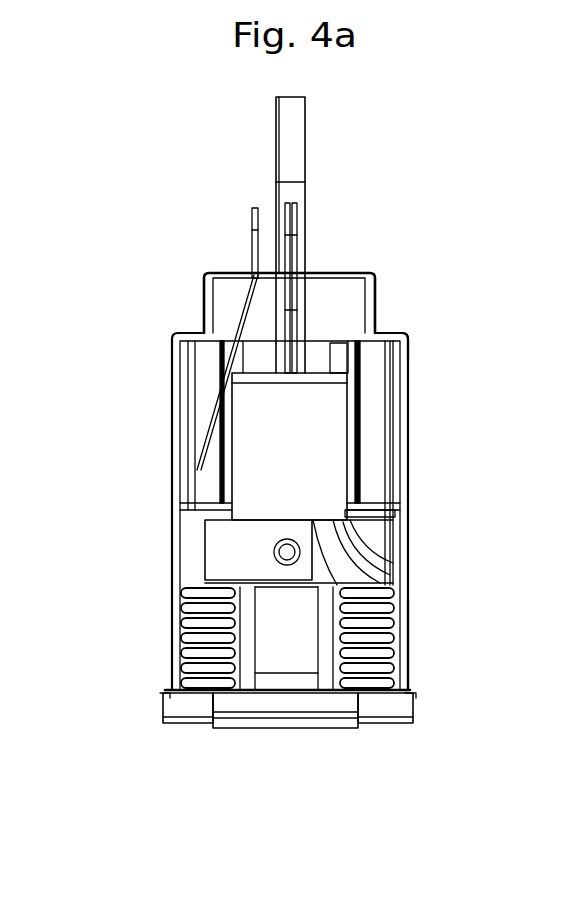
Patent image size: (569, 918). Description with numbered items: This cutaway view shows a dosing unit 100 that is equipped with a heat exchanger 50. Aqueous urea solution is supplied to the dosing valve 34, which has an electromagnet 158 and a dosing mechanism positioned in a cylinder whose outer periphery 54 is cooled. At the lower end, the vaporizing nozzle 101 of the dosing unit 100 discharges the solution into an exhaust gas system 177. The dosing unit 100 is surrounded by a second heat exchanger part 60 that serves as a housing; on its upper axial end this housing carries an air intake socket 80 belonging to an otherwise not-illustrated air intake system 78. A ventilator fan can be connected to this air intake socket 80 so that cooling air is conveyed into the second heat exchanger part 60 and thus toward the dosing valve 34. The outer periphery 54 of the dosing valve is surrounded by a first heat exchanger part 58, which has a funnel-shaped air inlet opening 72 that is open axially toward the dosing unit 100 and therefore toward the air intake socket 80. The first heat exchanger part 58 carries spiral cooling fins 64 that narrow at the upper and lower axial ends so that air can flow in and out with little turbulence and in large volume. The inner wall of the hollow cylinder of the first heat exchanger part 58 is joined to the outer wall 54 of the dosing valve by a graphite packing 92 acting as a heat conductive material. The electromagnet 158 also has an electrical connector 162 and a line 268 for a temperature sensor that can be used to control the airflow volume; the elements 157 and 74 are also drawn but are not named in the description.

The actuating rod 157 is at (293, 152).
The electrical connector 162 is at (297, 242).
The dosing unit 100 is at (392, 278).
The line for a temperature sensor 268 is at (256, 265).
The air intake system 78 is at (203, 300).
The air intake socket 80 is at (224, 305).
The dosing valve 34 is at (223, 447).
The electromagnet 158 is at (272, 457).
The second heat exchanger part 60 is at (400, 430).
The funnel-shaped air inlet opening 72 is at (370, 547).
The spiral cooling fins 64 is at (385, 618).
The graphite packing 92 is at (240, 623).
The heat exchanger 50 is at (409, 657).
The first heat exchanger part 58 is at (395, 680).
The flange 74 is at (378, 712).
The outer periphery 54 is at (278, 647).
The exhaust gas system 177 is at (300, 804).
The vaporizing nozzle 101 is at (317, 720).